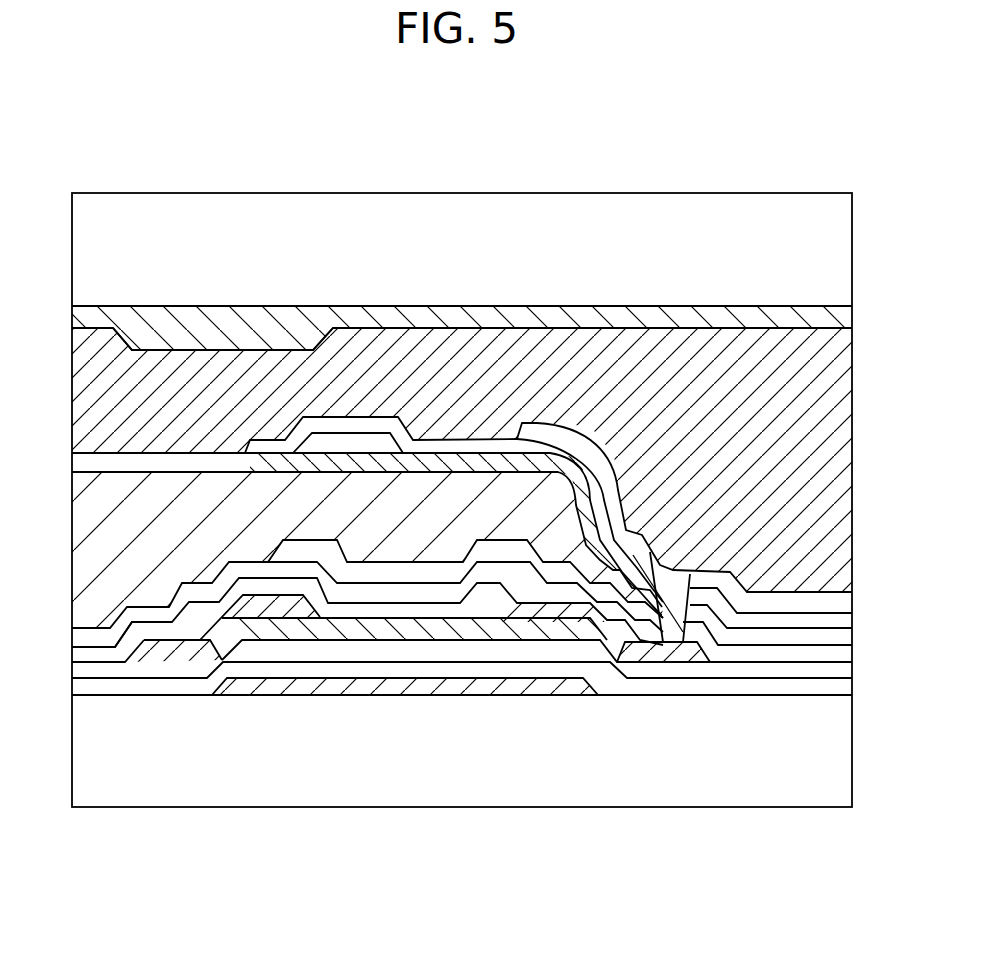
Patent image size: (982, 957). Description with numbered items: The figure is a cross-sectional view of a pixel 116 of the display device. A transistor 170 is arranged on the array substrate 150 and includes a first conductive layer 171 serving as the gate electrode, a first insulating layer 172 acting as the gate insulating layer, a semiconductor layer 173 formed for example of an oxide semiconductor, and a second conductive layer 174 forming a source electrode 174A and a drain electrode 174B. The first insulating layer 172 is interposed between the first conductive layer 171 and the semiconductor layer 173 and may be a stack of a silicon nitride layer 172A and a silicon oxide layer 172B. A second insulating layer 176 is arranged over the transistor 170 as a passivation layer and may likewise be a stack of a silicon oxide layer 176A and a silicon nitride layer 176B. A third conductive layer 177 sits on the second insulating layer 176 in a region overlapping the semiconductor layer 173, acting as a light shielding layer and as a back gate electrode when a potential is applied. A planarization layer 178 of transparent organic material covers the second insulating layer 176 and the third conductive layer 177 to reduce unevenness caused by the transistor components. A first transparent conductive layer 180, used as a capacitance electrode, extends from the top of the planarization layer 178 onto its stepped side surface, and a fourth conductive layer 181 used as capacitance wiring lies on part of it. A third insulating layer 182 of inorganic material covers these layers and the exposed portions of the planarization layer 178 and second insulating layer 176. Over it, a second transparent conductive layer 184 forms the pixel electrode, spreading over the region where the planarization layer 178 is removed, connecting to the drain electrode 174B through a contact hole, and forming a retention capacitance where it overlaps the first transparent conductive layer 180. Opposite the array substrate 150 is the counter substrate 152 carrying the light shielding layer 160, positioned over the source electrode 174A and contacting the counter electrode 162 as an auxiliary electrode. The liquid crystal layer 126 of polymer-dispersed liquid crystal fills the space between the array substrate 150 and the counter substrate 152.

The pixel 116 is at (148, 166).
The counter substrate 152 is at (853, 289).
The light shielding layer 160 is at (232, 320).
The counter electrode 162 is at (680, 320).
The liquid crystal layer 126 is at (853, 461).
The planarization layer 178 is at (82, 561).
The third insulating layer 182 is at (72, 463).
The fourth conductive layer 181 is at (345, 440).
The first transparent conductive layer 180 is at (452, 455).
The second transparent conductive layer 184 is at (558, 438).
The third conductive layer 177 is at (462, 574).
The semiconductor layer 173 is at (348, 632).
The transistor 170 is at (494, 716).
The second conductive layer 174 is at (531, 762).
The source electrode 174A is at (220, 636).
The drain electrode 174B is at (622, 655).
The first conductive layer 171 is at (275, 688).
The array substrate 150 is at (853, 756).
The second insulating layer 176 is at (180, 845).
The silicon oxide layer 176A is at (80, 658).
The silicon nitride layer 176B is at (139, 634).
The first insulating layer 172 is at (688, 845).
The silicon nitride layer 172A is at (715, 690).
The silicon oxide layer 172B is at (778, 670).